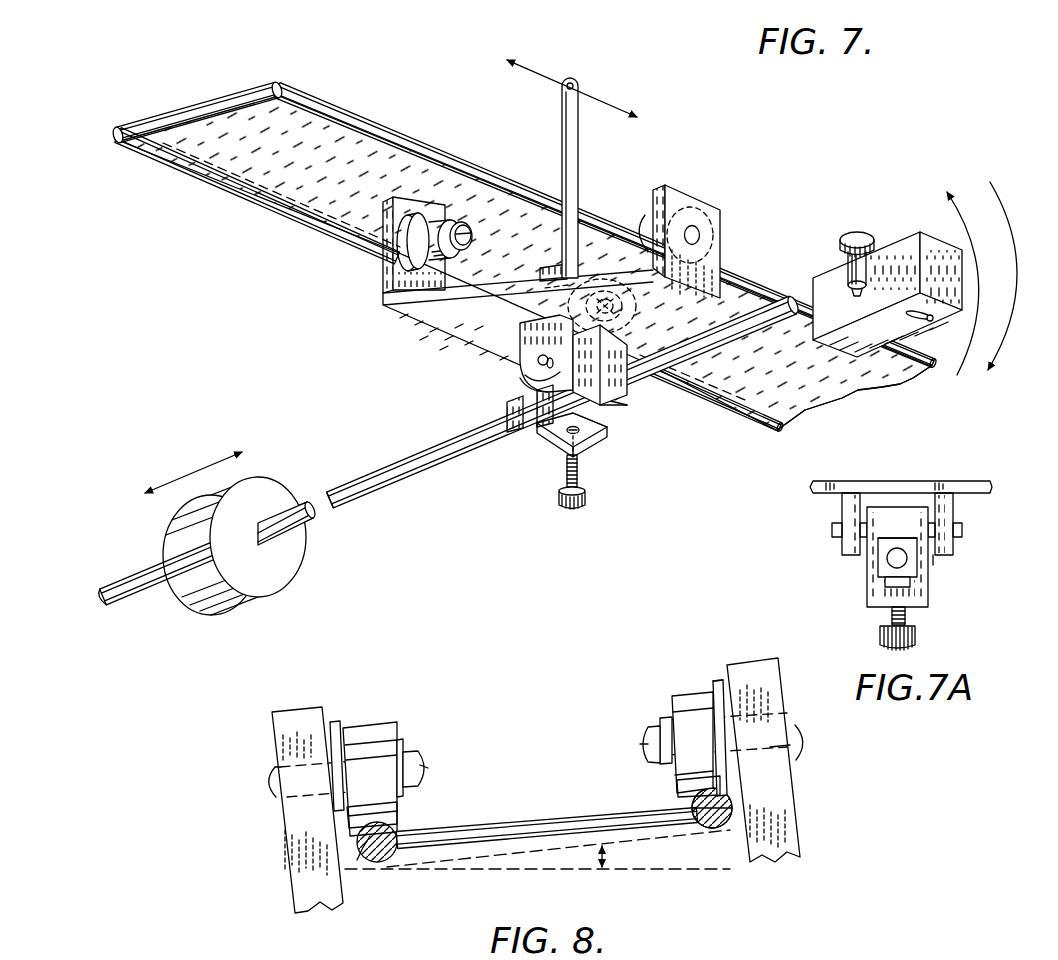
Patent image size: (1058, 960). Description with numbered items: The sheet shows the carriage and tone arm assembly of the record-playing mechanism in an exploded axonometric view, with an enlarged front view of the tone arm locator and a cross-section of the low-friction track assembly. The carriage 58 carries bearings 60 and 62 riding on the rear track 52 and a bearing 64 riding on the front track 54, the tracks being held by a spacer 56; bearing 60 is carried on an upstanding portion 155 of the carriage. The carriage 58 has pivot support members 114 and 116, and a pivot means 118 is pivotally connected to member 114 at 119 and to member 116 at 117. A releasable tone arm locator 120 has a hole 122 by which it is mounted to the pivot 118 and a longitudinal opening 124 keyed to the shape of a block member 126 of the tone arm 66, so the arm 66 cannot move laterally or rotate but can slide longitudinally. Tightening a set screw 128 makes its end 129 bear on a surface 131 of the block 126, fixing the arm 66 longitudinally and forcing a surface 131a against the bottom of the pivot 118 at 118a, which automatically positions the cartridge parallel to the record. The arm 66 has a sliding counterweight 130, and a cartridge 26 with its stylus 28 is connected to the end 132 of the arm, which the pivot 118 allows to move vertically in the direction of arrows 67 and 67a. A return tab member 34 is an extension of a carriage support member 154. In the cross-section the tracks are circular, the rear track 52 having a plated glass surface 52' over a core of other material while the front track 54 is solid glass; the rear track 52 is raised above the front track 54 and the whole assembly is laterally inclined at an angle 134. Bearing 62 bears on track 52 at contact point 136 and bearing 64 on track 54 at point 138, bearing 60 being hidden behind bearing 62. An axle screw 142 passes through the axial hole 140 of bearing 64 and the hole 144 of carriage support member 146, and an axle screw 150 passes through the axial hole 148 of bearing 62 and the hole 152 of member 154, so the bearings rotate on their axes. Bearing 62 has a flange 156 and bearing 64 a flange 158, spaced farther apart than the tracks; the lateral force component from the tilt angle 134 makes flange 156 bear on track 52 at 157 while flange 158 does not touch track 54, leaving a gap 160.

In FIG. 7, the cartridge 26 is at (910, 240).
In FIG. 7, the stylus 28 is at (922, 321).
In FIG. 7, the return tab member 34 is at (580, 147).
In FIG. 7, the rear track 52 is at (449, 295).
In FIG. 8, the rear track 52 is at (702, 856).
In FIG. 8, the plated glass surface 52' is at (691, 828).
In FIG. 7, the front track 54 is at (348, 117).
In FIG. 8, the front track 54 is at (387, 863).
In FIG. 7, the spacer 56 is at (208, 113).
In FIG. 8, the spacer 56 is at (580, 818).
In FIG. 7, the carriage 58 is at (447, 322).
In FIG. 7A, the carriage 58 is at (962, 478).
In FIG. 7, the bearing 60 is at (460, 250).
In FIG. 7, the bearing 62 is at (633, 313).
In FIG. 8, the bearing 62 is at (693, 695).
In FIG. 7, the bearing 64 is at (643, 238).
In FIG. 8, the bearing 64 is at (367, 725).
In FIG. 7, the tone arm 66 is at (355, 478).
In FIG. 7A, the tone arm 66 is at (902, 558).
In FIG. 7, the arrow 67 is at (958, 378).
In FIG. 7, the arrow 67a is at (990, 183).
In FIG. 7, the pivot support member 114 is at (518, 372).
In FIG. 7A, the pivot support member 114 is at (847, 510).
In FIG. 7A, the pivot support member 116 is at (943, 513).
In FIG. 7, the connection point 117 is at (627, 405).
In FIG. 7, the pivot means 118 is at (617, 345).
In FIG. 7A, the pivot means 118 is at (933, 565).
In FIG. 7A, the bottom of pivot 118a is at (907, 540).
In FIG. 7, the connection point 119 is at (538, 353).
In FIG. 7A, the releasable tone arm locator 120 is at (930, 597).
In FIG. 7, the hole 122 is at (523, 390).
In FIG. 7A, the hole 122 is at (942, 538).
In FIG. 7, the longitudinal opening 124 is at (579, 428).
In FIG. 7A, the longitudinal opening 124 is at (887, 580).
In FIG. 7, the block member 126 is at (498, 418).
In FIG. 7, the set screw 128 is at (587, 497).
In FIG. 7A, the set screw 128 is at (917, 633).
In FIG. 7, the end of set screw 129 is at (580, 460).
In FIG. 7A, the end of set screw 129 is at (887, 583).
In FIG. 7, the counterweight 130 is at (267, 490).
In FIG. 7, the surface 131 is at (527, 433).
In FIG. 7, the surface 131a is at (600, 420).
In FIG. 7A, the surface 131a is at (890, 540).
In FIG. 7, the end of arm 132 is at (790, 283).
In FIG. 8, the angle 134 is at (600, 857).
In FIG. 8, the contact point 136 is at (700, 787).
In FIG. 8, the contact point 138 is at (398, 810).
In FIG. 8, the axial hole 140 is at (378, 757).
In FIG. 8, the axle screw 142 is at (424, 750).
In FIG. 8, the hole 144 is at (298, 765).
In FIG. 7, the carriage support member 146 is at (707, 207).
In FIG. 8, the carriage support member 146 is at (298, 867).
In FIG. 8, the axial hole 148 is at (683, 723).
In FIG. 8, the axle screw 150 is at (645, 732).
In FIG. 8, the hole 152 is at (770, 747).
In FIG. 7, the carriage support member 154 is at (562, 267).
In FIG. 8, the carriage support member 154 is at (783, 683).
In FIG. 7, the bracket 155 is at (387, 270).
In FIG. 8, the flange 156 is at (717, 678).
In FIG. 8, the bearing point 157 is at (722, 797).
In FIG. 8, the flange 158 is at (335, 720).
In FIG. 8, the gap 160 is at (357, 857).